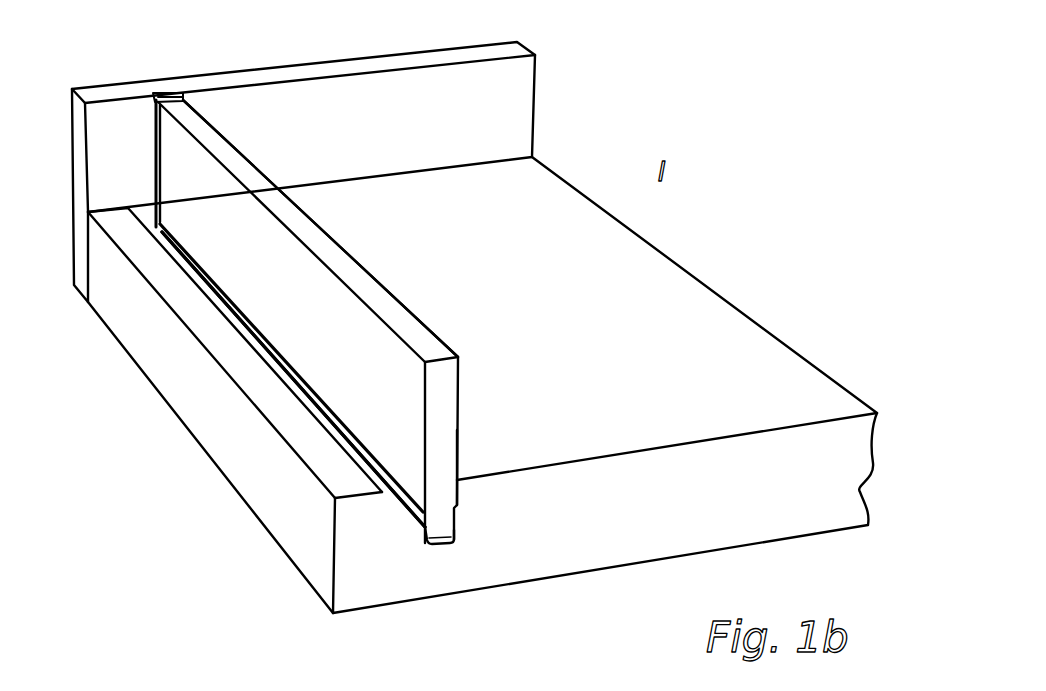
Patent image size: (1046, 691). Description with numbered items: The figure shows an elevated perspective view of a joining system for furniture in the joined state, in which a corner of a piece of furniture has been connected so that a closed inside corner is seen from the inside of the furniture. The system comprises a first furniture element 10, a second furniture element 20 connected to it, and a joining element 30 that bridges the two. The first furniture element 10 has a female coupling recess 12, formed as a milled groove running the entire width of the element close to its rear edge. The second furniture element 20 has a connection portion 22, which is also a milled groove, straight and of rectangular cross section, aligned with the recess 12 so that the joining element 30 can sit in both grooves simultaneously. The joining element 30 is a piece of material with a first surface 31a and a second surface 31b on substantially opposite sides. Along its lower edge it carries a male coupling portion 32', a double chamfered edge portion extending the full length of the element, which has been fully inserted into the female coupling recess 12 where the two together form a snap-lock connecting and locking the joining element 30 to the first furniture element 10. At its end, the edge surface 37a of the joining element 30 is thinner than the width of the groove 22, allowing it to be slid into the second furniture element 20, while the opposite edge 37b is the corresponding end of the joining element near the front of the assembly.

The first furniture element 10 is at (589, 369).
The female coupling recess 12 is at (366, 462).
The second furniture element 20 is at (419, 123).
The connection portion 22 is at (153, 132).
The joining element 30 is at (245, 173).
The first surface 31a is at (262, 274).
The second surface 31b is at (379, 285).
The male coupling portion 32' is at (463, 600).
The edge surface 37a is at (162, 96).
The lower fixing part 37b is at (442, 441).